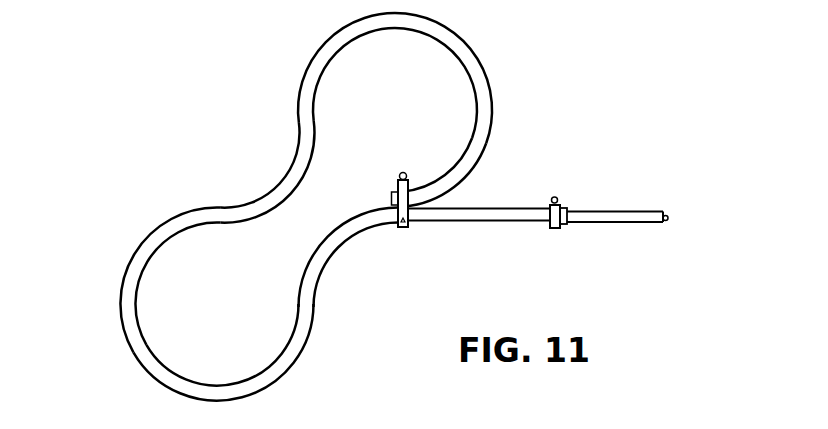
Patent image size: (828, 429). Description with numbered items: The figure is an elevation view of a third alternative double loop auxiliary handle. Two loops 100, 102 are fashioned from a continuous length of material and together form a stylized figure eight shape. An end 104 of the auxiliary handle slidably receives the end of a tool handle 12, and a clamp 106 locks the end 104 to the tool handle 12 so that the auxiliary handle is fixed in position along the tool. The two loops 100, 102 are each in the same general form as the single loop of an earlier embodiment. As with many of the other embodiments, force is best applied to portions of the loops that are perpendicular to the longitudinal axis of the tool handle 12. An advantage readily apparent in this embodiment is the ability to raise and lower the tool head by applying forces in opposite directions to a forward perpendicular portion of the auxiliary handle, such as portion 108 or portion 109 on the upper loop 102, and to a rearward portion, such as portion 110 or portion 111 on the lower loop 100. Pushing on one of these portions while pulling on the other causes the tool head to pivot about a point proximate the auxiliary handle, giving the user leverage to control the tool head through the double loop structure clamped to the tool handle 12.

The loop 100 is at (236, 331).
The loop 102 is at (409, 106).
The end 104 is at (544, 222).
The clamp 106 is at (558, 204).
The forward perpendicular portion 108 is at (300, 100).
The forward perpendicular portion 109 is at (494, 108).
The rearward portion 110 is at (118, 304).
The rearward portion 111 is at (314, 318).
The tool handle 12 is at (657, 224).